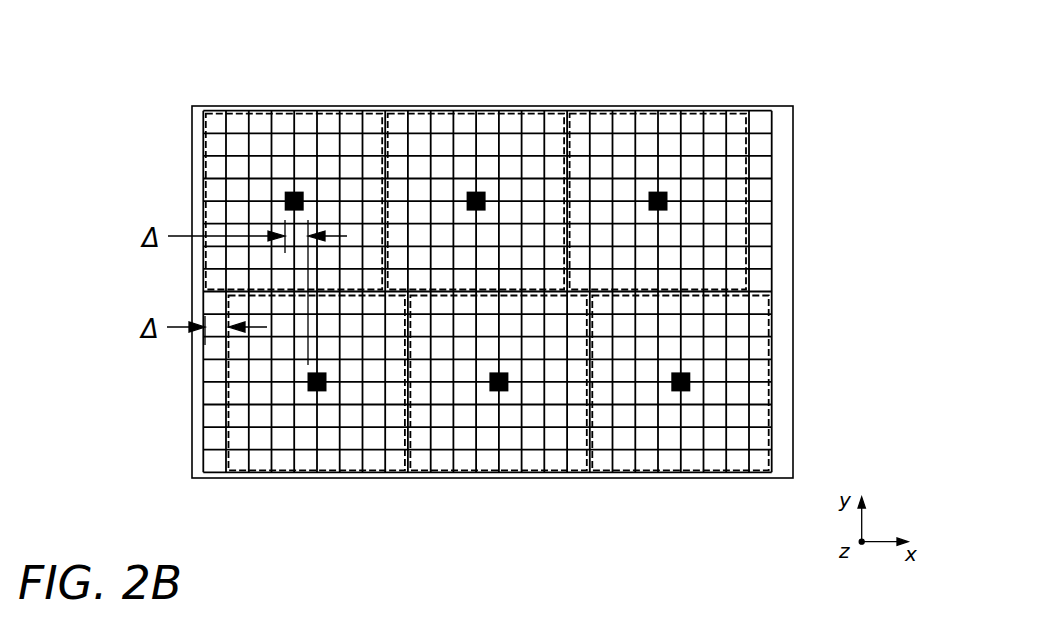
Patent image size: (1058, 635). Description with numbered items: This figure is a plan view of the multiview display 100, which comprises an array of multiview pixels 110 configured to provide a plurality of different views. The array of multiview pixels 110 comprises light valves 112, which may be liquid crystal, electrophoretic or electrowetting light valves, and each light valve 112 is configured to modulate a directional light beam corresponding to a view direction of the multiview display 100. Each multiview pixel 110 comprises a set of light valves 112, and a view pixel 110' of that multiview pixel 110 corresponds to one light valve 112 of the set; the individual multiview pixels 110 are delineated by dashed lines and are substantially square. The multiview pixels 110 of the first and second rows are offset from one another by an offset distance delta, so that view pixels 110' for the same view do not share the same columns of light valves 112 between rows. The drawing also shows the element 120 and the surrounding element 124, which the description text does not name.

The multiview display 100 is at (793, 48).
The multiview pixel 110 is at (397, 294).
The view pixel 110' is at (672, 177).
The light valve 112 is at (776, 383).
The marker element 120 is at (270, 201).
The frame 124 is at (792, 292).